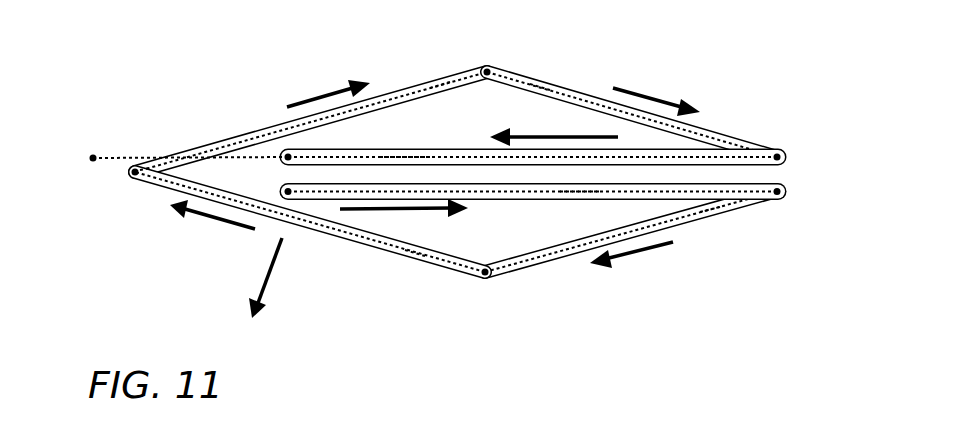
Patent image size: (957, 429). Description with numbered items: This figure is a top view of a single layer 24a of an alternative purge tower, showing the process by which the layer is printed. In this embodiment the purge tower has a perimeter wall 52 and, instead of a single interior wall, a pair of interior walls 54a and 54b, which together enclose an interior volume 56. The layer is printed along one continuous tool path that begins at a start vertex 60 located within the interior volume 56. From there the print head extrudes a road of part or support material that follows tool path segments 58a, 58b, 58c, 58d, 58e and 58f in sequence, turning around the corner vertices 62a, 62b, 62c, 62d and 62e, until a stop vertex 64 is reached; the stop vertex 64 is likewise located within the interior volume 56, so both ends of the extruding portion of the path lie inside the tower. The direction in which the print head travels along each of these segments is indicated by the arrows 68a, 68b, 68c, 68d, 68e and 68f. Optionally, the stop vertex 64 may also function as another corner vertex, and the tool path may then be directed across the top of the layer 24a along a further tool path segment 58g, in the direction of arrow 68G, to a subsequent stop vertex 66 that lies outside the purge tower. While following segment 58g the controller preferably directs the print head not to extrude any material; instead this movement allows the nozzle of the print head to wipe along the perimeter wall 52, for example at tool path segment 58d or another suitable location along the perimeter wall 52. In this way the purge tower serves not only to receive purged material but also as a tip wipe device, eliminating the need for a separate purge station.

The layer 24a is at (135, 250).
The perimeter wall 52 is at (443, 75).
The interior wall 54a is at (487, 201).
The interior wall 54b is at (421, 150).
The interior volume 56 is at (500, 108).
The tool path segment 58a is at (580, 192).
The tool path segment 58b is at (571, 248).
The tool path segment 58c is at (452, 267).
The tool path segment 58d is at (245, 137).
The tool path segment 58e is at (723, 142).
The tool path segment 58f is at (384, 156).
The tool path segment 58g is at (137, 157).
The start vertex 60 is at (280, 192).
The corner vertex 62a is at (780, 194).
The corner vertex 62b is at (488, 275).
The corner vertex 62c is at (131, 176).
The corner vertex 62d is at (487, 72).
The corner vertex 62e is at (779, 156).
The stop vertex 64 is at (292, 154).
The subsequent stop vertex 66 is at (93, 158).
The arrow 68a is at (377, 211).
The arrow 68b is at (640, 250).
The arrow 68c is at (210, 220).
The arrow 68d is at (318, 95).
The arrow 68e is at (653, 97).
The arrow 68f is at (580, 137).
The arrow 68G is at (273, 270).